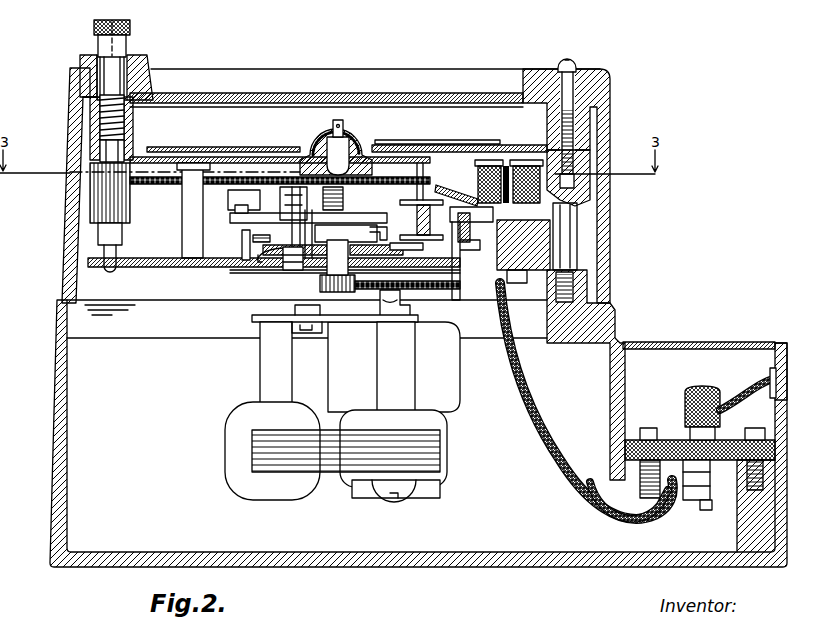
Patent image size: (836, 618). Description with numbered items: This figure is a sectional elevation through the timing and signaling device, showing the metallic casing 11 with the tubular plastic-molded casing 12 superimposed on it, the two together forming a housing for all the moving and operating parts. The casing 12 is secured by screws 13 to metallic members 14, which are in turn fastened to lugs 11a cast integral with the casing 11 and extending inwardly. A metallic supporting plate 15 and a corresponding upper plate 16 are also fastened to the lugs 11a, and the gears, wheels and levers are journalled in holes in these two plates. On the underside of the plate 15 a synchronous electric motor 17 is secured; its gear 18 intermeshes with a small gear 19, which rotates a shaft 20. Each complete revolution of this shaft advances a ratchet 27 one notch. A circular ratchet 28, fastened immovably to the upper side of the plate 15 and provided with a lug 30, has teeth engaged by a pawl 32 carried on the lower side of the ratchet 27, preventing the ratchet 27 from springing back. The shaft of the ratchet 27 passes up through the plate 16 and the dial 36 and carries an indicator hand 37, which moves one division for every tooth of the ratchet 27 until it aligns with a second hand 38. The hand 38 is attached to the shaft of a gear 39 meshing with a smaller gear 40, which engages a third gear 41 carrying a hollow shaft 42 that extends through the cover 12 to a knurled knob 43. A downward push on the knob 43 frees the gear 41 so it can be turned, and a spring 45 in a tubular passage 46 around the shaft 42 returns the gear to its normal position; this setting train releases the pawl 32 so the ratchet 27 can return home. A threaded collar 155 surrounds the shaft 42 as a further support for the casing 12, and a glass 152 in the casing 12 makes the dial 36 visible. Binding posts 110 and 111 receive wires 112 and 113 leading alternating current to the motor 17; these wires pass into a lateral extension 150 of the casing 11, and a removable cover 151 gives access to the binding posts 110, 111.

The metallic casing 11 is at (62, 504).
The lugs 11a is at (603, 323).
The tubular plastic-molded casing 12 is at (603, 257).
The screws 13 is at (575, 68).
The metallic members 14 is at (590, 183).
The supporting plate 15 is at (160, 267).
The plate 16 is at (213, 147).
The synchronous electric motor 17 is at (442, 397).
The gear 18 is at (412, 311).
The small gear 19 is at (320, 286).
The shaft 20 is at (366, 283).
The ratchet 27 is at (233, 218).
The circular ratchet 28 is at (291, 266).
The lug 30 is at (262, 261).
The pawl 32 is at (350, 198).
The dial 36 is at (510, 146).
The indicator hand 37 is at (352, 139).
The hand 38 is at (492, 145).
The gear 39 is at (480, 178).
The smaller gear 40 is at (131, 197).
The third gear 41 is at (127, 212).
The shaft 42 is at (128, 141).
The knurled knob 43 is at (131, 29).
The spring 45 is at (97, 122).
The tubular passage 46 is at (125, 117).
The binding post 110 is at (499, 175).
The binding post 111 is at (528, 175).
The wire 112 is at (589, 480).
The wire 113 is at (558, 462).
The lateral extension 150 is at (682, 358).
The removable cover 151 is at (742, 343).
The glass 152 is at (403, 97).
The threaded collar 155 is at (140, 60).